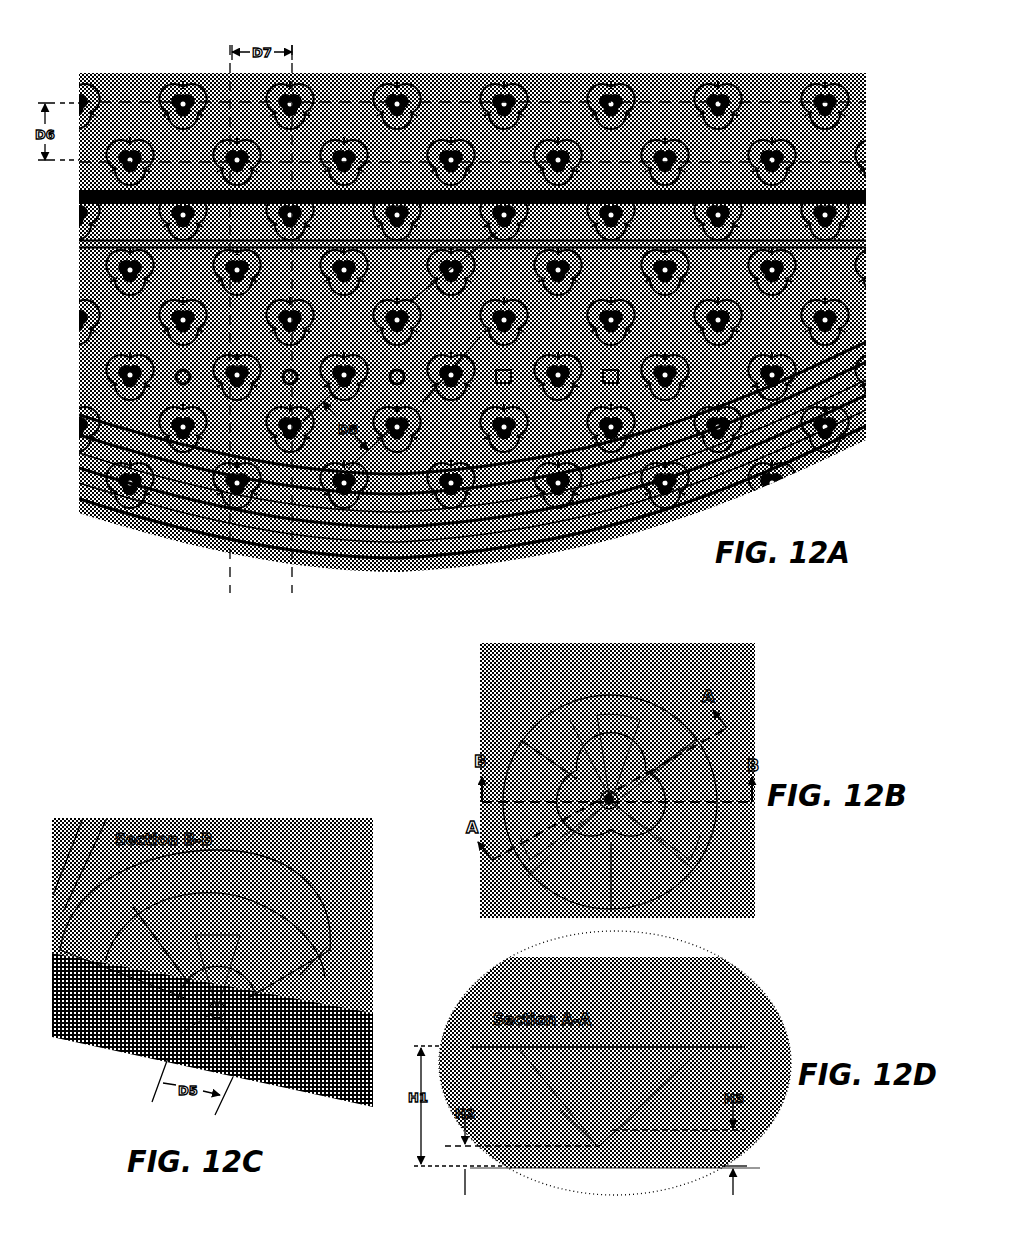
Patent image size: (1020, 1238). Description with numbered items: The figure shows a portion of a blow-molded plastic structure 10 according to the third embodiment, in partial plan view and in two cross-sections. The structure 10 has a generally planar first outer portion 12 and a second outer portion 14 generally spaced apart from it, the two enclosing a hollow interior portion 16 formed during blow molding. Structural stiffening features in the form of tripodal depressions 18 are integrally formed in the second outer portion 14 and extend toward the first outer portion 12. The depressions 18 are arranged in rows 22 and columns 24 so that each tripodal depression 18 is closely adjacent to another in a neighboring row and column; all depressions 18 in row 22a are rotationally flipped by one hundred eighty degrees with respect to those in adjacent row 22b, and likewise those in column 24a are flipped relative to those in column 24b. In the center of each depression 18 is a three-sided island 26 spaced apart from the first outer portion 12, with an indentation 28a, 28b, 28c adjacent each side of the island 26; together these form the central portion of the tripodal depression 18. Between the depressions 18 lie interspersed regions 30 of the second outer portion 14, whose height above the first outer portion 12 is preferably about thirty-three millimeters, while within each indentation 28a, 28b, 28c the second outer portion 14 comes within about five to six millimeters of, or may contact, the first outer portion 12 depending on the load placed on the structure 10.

In FIG. 12A, the blow-molded plastic structure 10 is at (885, 75).
In FIG. 12C, the first outer portion 12 is at (318, 1097).
In FIG. 12D, the first outer portion 12 is at (660, 1165).
In FIG. 12A, the second outer portion 14 is at (565, 443).
In FIG. 12D, the second outer portion 14 is at (772, 1045).
In FIG. 12C, the hollow interior portion 16 is at (88, 1013).
In FIG. 12D, the hollow interior portion 16 is at (525, 1119).
In FIG. 12A, the tripodal depression 18 is at (455, 138).
In FIG. 12B, the tripodal depression 18 is at (560, 740).
In FIG. 12A, the rows 22 is at (73, 320).
In FIG. 12A, the row 22a is at (872, 102).
In FIG. 12A, the adjacent row 22b is at (872, 162).
In FIG. 12A, the columns 24 is at (183, 70).
In FIG. 12A, the column 24a is at (230, 603).
In FIG. 12A, the adjacent column 24b is at (292, 603).
In FIG. 12B, the three-sided island 26 is at (608, 797).
In FIG. 12C, the three-sided island 26 is at (213, 1005).
In FIG. 12D, the three-sided island 26 is at (598, 1147).
In FIG. 12B, the indentation 28a is at (612, 797).
In FIG. 12C, the indentation 28a is at (232, 1005).
In FIG. 12B, the indentation 28b is at (606, 806).
In FIG. 12C, the indentation 28b is at (178, 1035).
In FIG. 12D, the indentation 28b is at (598, 1147).
In FIG. 12B, the indentation 28c is at (614, 806).
In FIG. 12C, the indentation 28c is at (245, 1063).
In FIG. 12A, the interspersed regions 30 is at (560, 120).
In FIG. 12D, the interspersed regions 30 is at (452, 1040).